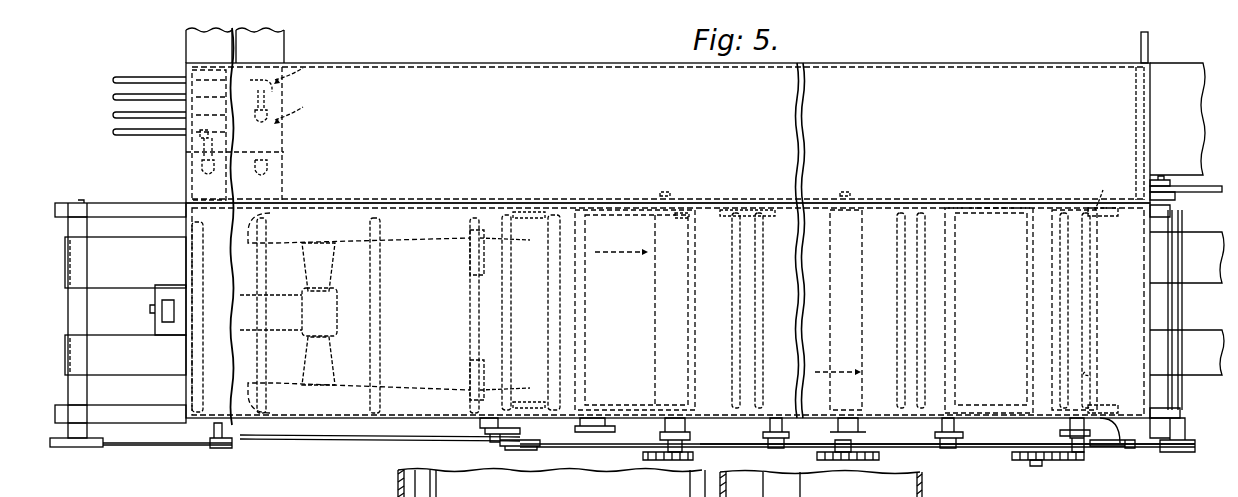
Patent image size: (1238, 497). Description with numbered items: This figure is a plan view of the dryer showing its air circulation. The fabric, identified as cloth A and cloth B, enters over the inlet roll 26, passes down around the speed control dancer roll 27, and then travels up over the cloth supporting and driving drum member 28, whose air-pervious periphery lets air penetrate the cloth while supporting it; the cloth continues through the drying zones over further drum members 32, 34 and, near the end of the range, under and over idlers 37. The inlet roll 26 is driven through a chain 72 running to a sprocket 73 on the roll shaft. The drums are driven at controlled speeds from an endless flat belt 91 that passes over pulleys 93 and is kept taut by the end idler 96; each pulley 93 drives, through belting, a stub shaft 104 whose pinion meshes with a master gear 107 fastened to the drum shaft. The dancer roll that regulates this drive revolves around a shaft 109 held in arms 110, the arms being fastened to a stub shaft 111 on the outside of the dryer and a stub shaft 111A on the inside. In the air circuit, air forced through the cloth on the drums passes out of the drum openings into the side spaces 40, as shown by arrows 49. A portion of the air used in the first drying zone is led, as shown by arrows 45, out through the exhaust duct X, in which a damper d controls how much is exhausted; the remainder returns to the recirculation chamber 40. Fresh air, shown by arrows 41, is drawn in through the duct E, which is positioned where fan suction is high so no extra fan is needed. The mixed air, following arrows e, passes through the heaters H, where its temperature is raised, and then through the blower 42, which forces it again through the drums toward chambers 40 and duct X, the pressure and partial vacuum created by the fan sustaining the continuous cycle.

The roll 26 is at (1180, 308).
The speed control dancer roll 27 is at (1118, 290).
The cloth supporting and driving drum member 28 is at (983, 214).
The drum member 32 is at (819, 212).
The drum member 34 is at (603, 212).
The idlers 37 is at (203, 368).
The side spaces 40 is at (643, 119).
The arrows 41 is at (220, 56).
The blower 42 is at (332, 266).
The arrows 45 is at (1017, 218).
The arrows 49 is at (636, 164).
The chain 72 is at (1200, 186).
The sprocket 73 is at (1172, 192).
The endless flat belt 91 is at (989, 446).
The pulleys 93 is at (778, 446).
The end idler 96 is at (556, 450).
The stub shaft 104 is at (715, 460).
The master gear 107 is at (1030, 462).
The shaft 109 is at (1120, 200).
The arms 110 is at (1136, 428).
The stub shaft 111 is at (1120, 445).
The stub shaft 111A is at (1086, 374).
The cloth A is at (100, 262).
The cloth B is at (100, 352).
The duct E is at (269, 114).
The heaters H is at (275, 184).
The exhaust duct X is at (1177, 119).
The damper d is at (1141, 42).
The arrows e is at (222, 266).